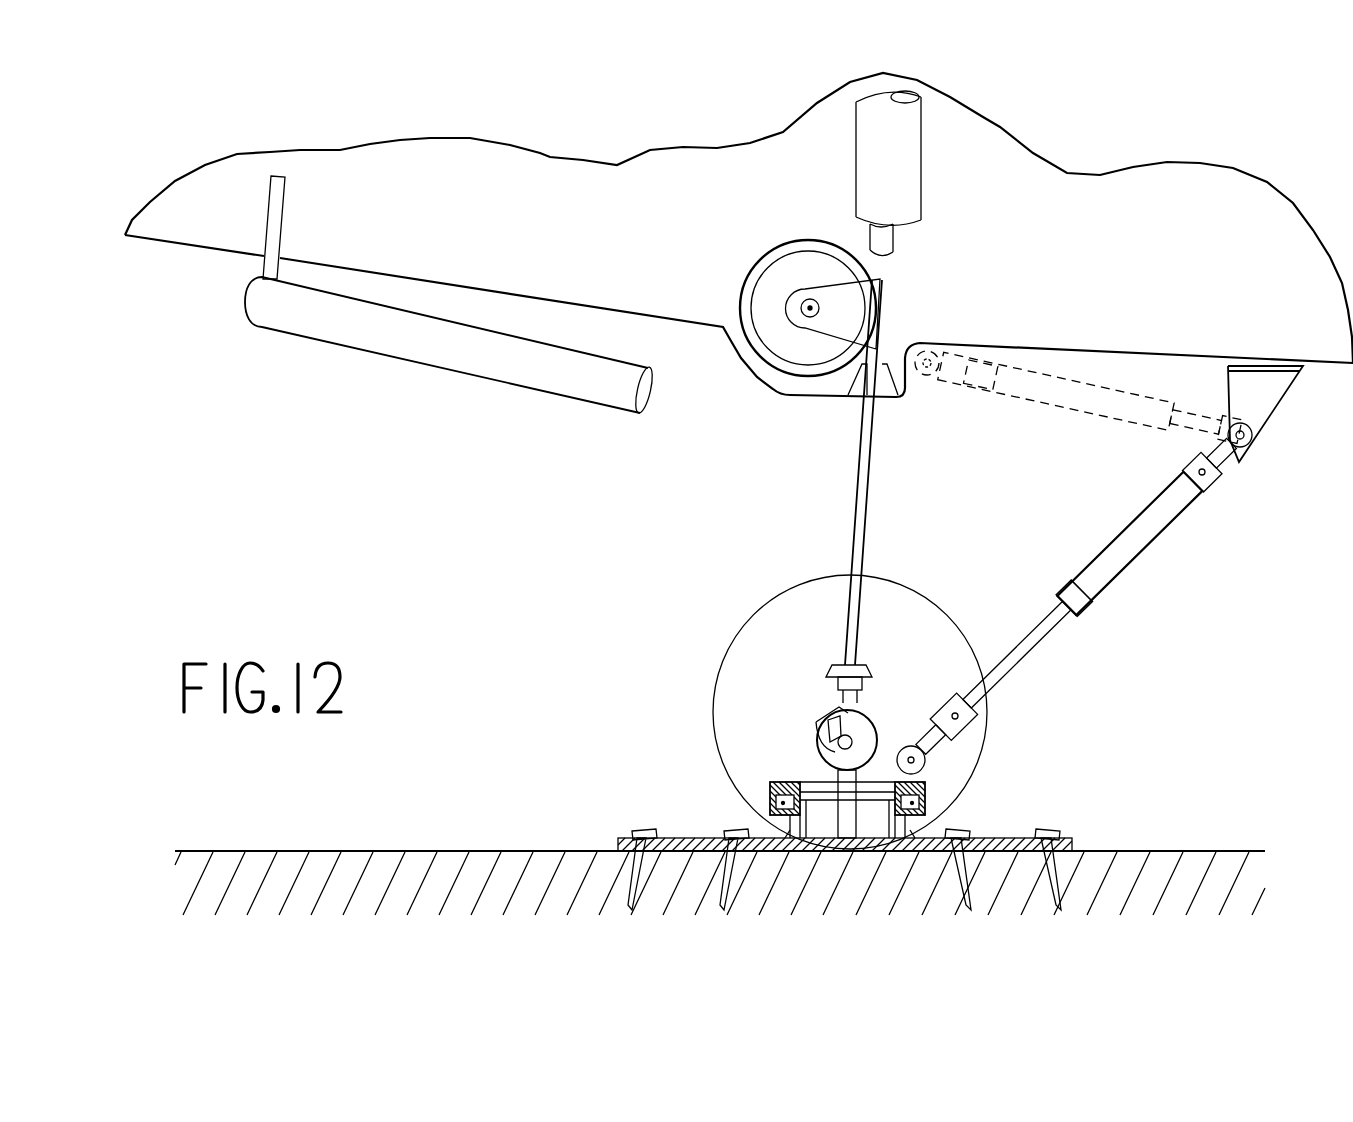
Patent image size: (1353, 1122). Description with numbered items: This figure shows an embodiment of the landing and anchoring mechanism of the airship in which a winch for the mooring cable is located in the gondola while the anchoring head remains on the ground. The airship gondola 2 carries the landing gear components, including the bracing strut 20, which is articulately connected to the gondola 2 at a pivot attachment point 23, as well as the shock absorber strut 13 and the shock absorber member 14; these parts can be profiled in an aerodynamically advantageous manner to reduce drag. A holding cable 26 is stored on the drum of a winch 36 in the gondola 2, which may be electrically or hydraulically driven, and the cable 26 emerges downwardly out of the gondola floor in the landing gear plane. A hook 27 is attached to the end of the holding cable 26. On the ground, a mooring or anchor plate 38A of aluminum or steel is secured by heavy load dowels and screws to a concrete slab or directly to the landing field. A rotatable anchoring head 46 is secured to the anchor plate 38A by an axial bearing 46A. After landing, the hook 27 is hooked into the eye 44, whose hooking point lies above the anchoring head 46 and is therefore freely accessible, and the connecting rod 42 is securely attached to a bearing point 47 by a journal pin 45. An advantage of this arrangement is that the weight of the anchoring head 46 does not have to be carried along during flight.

The airship gondola 2 is at (227, 231).
The pivot attachment point 23 is at (277, 220).
The bracing strut 20 is at (398, 341).
The winch 36 is at (778, 284).
The shock absorber strut 13 is at (896, 160).
The shock absorber member 14 is at (898, 237).
The holding cable 26 is at (862, 458).
The connecting rod 42 is at (1048, 424).
The hook 27 is at (838, 697).
The eye 44 is at (840, 748).
The journal pin 45 is at (913, 761).
The anchoring head 46 is at (757, 792).
The bearing point 47 is at (922, 781).
The axial bearing 46A is at (922, 800).
The anchor plate 38A is at (1070, 836).